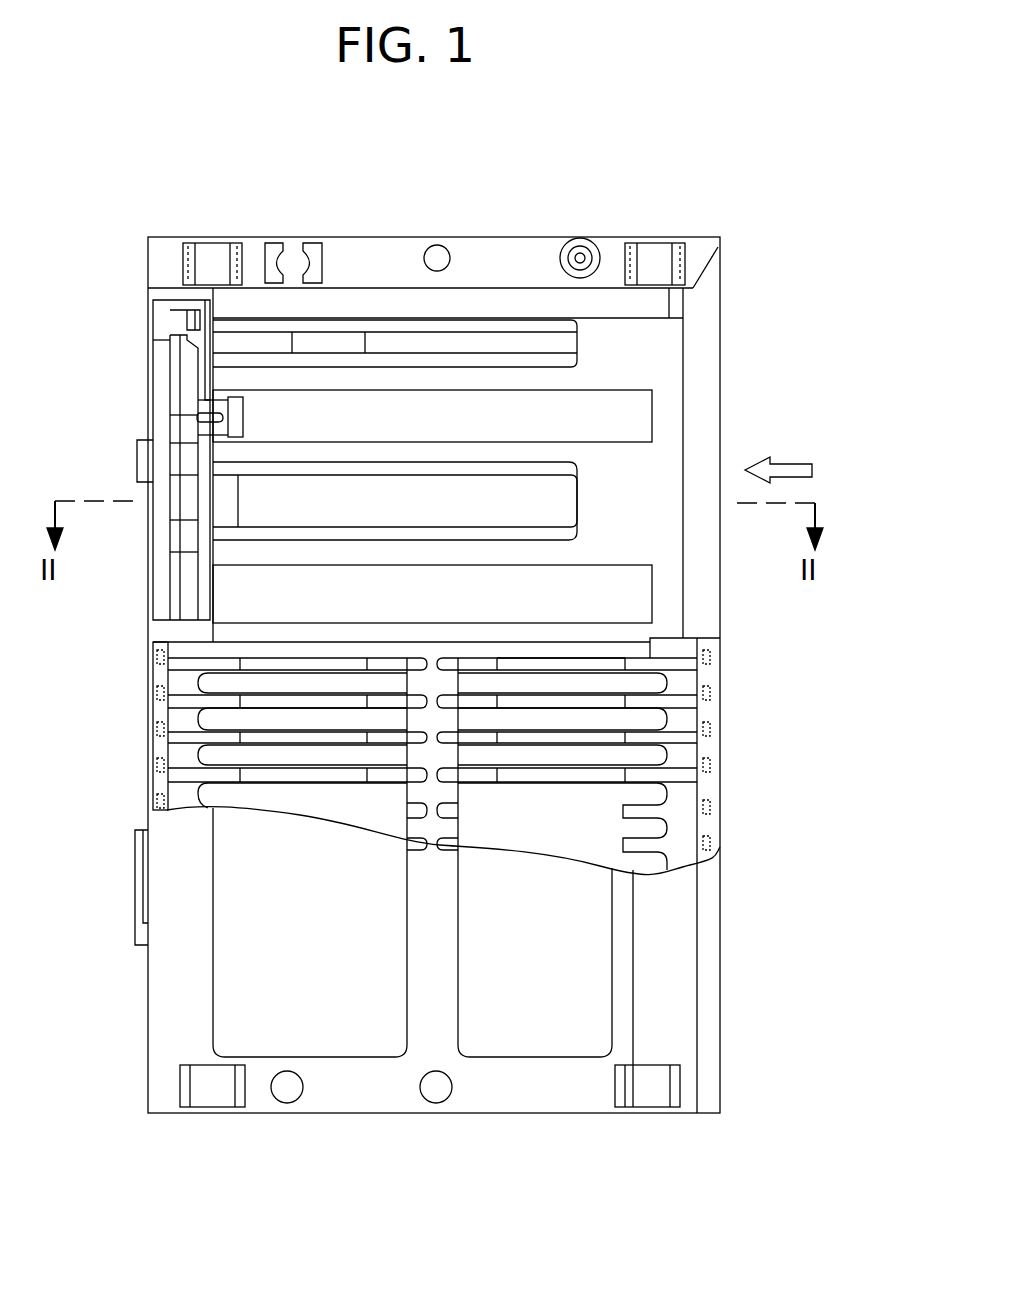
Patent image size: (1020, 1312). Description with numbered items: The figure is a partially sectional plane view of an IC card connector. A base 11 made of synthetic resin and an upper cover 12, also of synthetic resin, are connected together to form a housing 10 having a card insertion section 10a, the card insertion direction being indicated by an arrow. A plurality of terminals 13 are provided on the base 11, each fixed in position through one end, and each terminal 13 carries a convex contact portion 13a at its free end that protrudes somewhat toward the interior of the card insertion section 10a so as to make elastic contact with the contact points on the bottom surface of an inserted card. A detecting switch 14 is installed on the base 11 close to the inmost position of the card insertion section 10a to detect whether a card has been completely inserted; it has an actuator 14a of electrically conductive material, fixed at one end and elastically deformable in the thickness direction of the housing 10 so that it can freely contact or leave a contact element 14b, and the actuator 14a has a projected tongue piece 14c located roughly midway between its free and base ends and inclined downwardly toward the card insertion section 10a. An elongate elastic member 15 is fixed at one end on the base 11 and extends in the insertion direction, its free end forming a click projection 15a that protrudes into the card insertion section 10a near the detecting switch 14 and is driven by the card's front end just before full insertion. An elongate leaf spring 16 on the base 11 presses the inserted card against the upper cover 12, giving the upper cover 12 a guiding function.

The housing 10 is at (793, 604).
The card insertion section 10a is at (705, 321).
The base 11 is at (708, 610).
The upper cover 12 is at (672, 910).
The terminals 13 is at (170, 652).
The convex contact portion 13a is at (482, 650).
The detecting switch 14 is at (140, 390).
The actuator 14a is at (185, 320).
The contact element 14b is at (165, 352).
The projected tongue piece 14c is at (243, 416).
The elongate elastic member 15 is at (568, 500).
The click projection 15a is at (222, 483).
The elongate leaf spring 16 is at (388, 325).